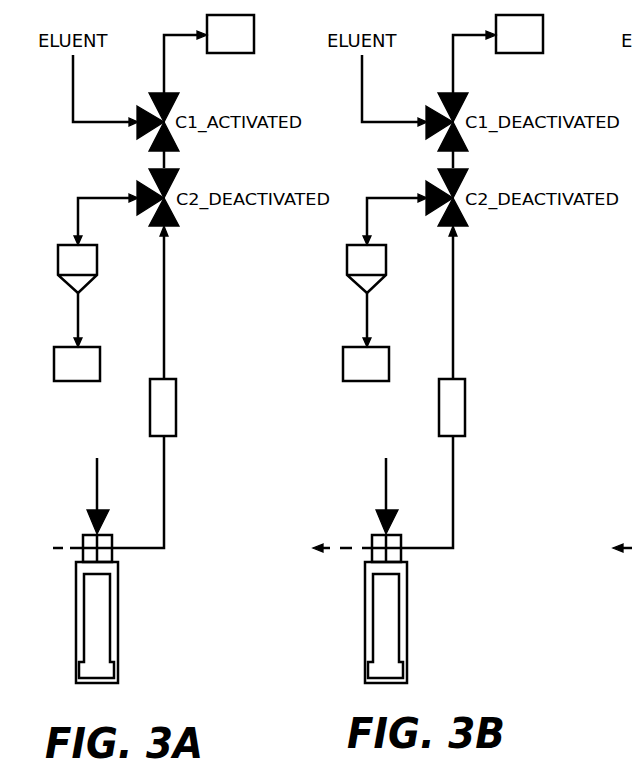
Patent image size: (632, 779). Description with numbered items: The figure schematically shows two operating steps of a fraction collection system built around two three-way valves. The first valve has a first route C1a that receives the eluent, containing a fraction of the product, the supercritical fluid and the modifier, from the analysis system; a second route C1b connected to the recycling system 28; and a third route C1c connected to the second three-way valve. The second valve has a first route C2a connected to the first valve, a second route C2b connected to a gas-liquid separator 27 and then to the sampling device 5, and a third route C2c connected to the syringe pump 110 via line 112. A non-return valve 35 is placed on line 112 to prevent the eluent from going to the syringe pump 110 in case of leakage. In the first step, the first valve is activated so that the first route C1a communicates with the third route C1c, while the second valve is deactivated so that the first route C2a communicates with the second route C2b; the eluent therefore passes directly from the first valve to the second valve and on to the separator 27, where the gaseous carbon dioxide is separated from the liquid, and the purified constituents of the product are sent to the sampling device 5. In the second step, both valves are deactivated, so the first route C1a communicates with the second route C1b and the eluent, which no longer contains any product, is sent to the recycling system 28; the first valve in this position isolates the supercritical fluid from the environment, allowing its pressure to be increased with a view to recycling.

In FIG. 3A, the sampling device 5 is at (77, 364).
In FIG. 3B, the sampling device 5 is at (366, 364).
In FIG. 3A, the gas-liquid separator 27 is at (60, 256).
In FIG. 3B, the gas-liquid separator 27 is at (349, 256).
In FIG. 3A, the recycling system 28 is at (230, 34).
In FIG. 3B, the recycling system 28 is at (519, 34).
In FIG. 3A, the non-return valve 35 is at (177, 420).
In FIG. 3B, the non-return valve 35 is at (466, 420).
In FIG. 3A, the syringe pump 110 is at (119, 621).
In FIG. 3B, the syringe pump 110 is at (408, 621).
In FIG. 3A, the line 112 is at (165, 325).
In FIG. 3B, the line 112 is at (454, 325).
In FIG. 3A, the first route of first valve C1a is at (147, 103).
In FIG. 3B, the first route of first valve C1a is at (436, 103).
In FIG. 3A, the second route of first valve C1b is at (179, 97).
In FIG. 3B, the second route of first valve C1b is at (468, 97).
In FIG. 3A, the third route of first valve C1c is at (178, 147).
In FIG. 3B, the third route of first valve C1c is at (467, 147).
In FIG. 3A, the first route of second valve C2a is at (179, 172).
In FIG. 3B, the first route of second valve C2a is at (468, 172).
In FIG. 3A, the second route of second valve C2b is at (137, 184).
In FIG. 3B, the second route of second valve C2b is at (426, 184).
In FIG. 3A, the third route of second valve C2c is at (179, 220).
In FIG. 3B, the third route of second valve C2c is at (468, 220).